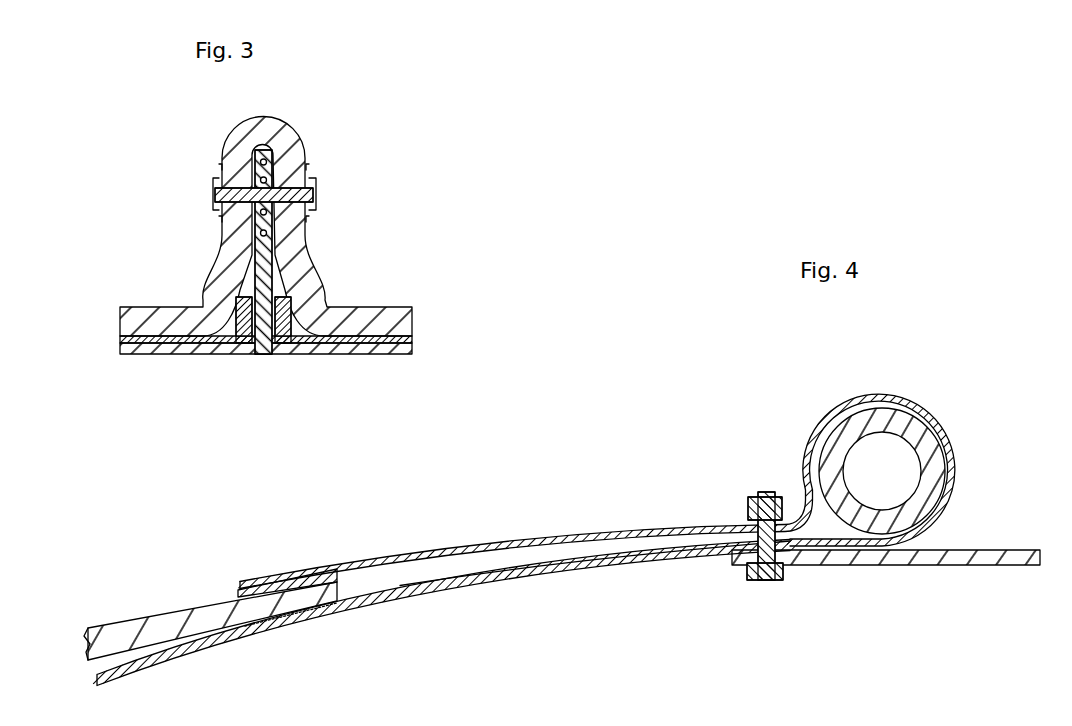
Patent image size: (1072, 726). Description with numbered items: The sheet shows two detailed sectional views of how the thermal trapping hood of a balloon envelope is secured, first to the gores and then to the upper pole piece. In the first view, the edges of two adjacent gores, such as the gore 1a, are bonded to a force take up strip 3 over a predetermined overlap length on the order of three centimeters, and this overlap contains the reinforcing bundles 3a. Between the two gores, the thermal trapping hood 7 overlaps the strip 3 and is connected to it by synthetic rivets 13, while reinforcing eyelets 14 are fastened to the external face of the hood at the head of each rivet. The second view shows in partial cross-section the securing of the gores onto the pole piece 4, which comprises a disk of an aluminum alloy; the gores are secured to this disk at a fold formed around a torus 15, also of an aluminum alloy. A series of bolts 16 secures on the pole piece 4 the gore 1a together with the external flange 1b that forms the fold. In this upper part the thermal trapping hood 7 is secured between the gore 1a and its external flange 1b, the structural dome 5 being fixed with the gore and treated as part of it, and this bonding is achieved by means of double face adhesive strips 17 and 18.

In FIG. 3, the gore 1a is at (377, 350).
In FIG. 4, the gore 1a is at (353, 608).
In FIG. 4, the external flange 1b is at (470, 545).
In FIG. 3, the force take up strip 3 is at (266, 355).
In FIG. 3, the reinforcing bundles 3a is at (252, 160).
In FIG. 4, the pole piece 4 is at (875, 565).
In FIG. 3, the structural dome 5 is at (333, 340).
In FIG. 4, the structural dome 5 is at (455, 567).
In FIG. 3, the thermal trapping hood 7 is at (330, 290).
In FIG. 4, the thermal trapping hood 7 is at (153, 622).
In FIG. 3, the synthetic rivets 13 is at (215, 197).
In FIG. 3, the reinforcing eyelets 14 is at (306, 168).
In FIG. 4, the torus 15 is at (922, 432).
In FIG. 4, the bolts 16 is at (757, 492).
In FIG. 4, the double face adhesive strip 17 is at (272, 580).
In FIG. 4, the double face adhesive strip 18 is at (250, 637).